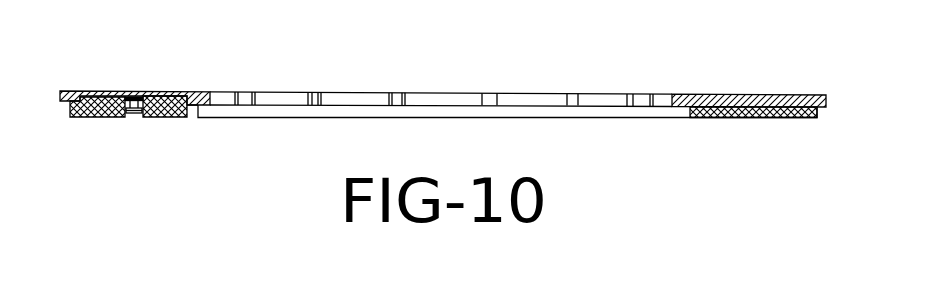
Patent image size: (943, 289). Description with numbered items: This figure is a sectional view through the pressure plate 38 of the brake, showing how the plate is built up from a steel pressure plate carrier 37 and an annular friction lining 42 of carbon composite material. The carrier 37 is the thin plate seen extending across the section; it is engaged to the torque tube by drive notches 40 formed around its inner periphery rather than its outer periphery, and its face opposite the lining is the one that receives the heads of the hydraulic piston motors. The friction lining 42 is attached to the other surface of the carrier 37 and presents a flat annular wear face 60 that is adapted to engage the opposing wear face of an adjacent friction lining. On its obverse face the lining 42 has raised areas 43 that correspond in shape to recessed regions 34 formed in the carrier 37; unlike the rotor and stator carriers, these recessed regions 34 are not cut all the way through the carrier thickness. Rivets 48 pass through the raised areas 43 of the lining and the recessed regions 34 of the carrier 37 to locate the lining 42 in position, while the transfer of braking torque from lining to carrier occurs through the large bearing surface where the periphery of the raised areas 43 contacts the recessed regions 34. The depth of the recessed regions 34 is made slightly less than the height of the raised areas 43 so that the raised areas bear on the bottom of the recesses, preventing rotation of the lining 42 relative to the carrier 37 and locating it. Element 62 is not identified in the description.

The recessed regions 34 is at (95, 118).
The pressure plate carrier 37 is at (772, 95).
The pressure plate 38 is at (616, 93).
The drive notches 40 is at (492, 99).
The friction lining 42 is at (750, 120).
The raised areas 43 is at (168, 96).
The rivets 48 is at (133, 97).
The wear face 60 is at (168, 118).
The nut 62 is at (130, 118).